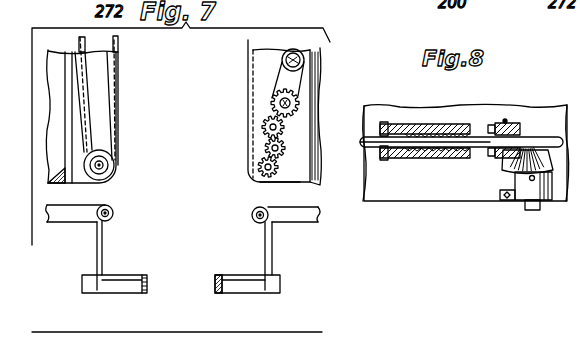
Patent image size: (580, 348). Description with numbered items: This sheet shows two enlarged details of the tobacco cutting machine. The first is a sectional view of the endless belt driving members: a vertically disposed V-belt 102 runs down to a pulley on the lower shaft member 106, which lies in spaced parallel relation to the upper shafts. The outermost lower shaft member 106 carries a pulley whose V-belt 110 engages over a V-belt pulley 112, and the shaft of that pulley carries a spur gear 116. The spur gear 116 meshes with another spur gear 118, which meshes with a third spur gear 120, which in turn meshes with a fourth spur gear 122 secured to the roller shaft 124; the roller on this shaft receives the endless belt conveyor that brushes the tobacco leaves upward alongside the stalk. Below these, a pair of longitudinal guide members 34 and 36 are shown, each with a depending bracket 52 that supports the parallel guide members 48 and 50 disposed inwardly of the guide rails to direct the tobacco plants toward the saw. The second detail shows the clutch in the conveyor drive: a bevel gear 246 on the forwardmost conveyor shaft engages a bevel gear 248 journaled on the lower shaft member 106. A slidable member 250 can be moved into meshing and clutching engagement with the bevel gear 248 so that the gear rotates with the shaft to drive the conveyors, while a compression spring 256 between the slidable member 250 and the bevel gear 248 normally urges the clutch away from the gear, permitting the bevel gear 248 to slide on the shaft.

In FIG. 7, the vertically disposed V-belt 102 is at (118, 50).
In FIG. 7, the lower shaft member 106 is at (284, 60).
In FIG. 7, the V-belt 110 is at (275, 82).
In FIG. 7, the V-belt pulley 112 is at (292, 97).
In FIG. 7, the spur gear 116 is at (300, 103).
In FIG. 7, the spur gear 118 is at (262, 127).
In FIG. 7, the third spur gear 120 is at (266, 148).
In FIG. 7, the fourth spur gear 122 is at (258, 168).
In FIG. 7, the roller shaft 124 is at (280, 170).
In FIG. 7, the longitudinal guide member 34 is at (115, 212).
In FIG. 7, the longitudinal guide member 36 is at (253, 219).
In FIG. 7, the bracket 52 is at (100, 257).
In FIG. 7, the guide member 48 is at (147, 287).
In FIG. 7, the guide member 50 is at (219, 293).
In FIG. 8, the bevel gear 246 is at (536, 152).
In FIG. 8, the bevel gear 248 is at (506, 119).
In FIG. 8, the slidable member 250 is at (418, 160).
In FIG. 8, the compression spring 256 is at (461, 160).